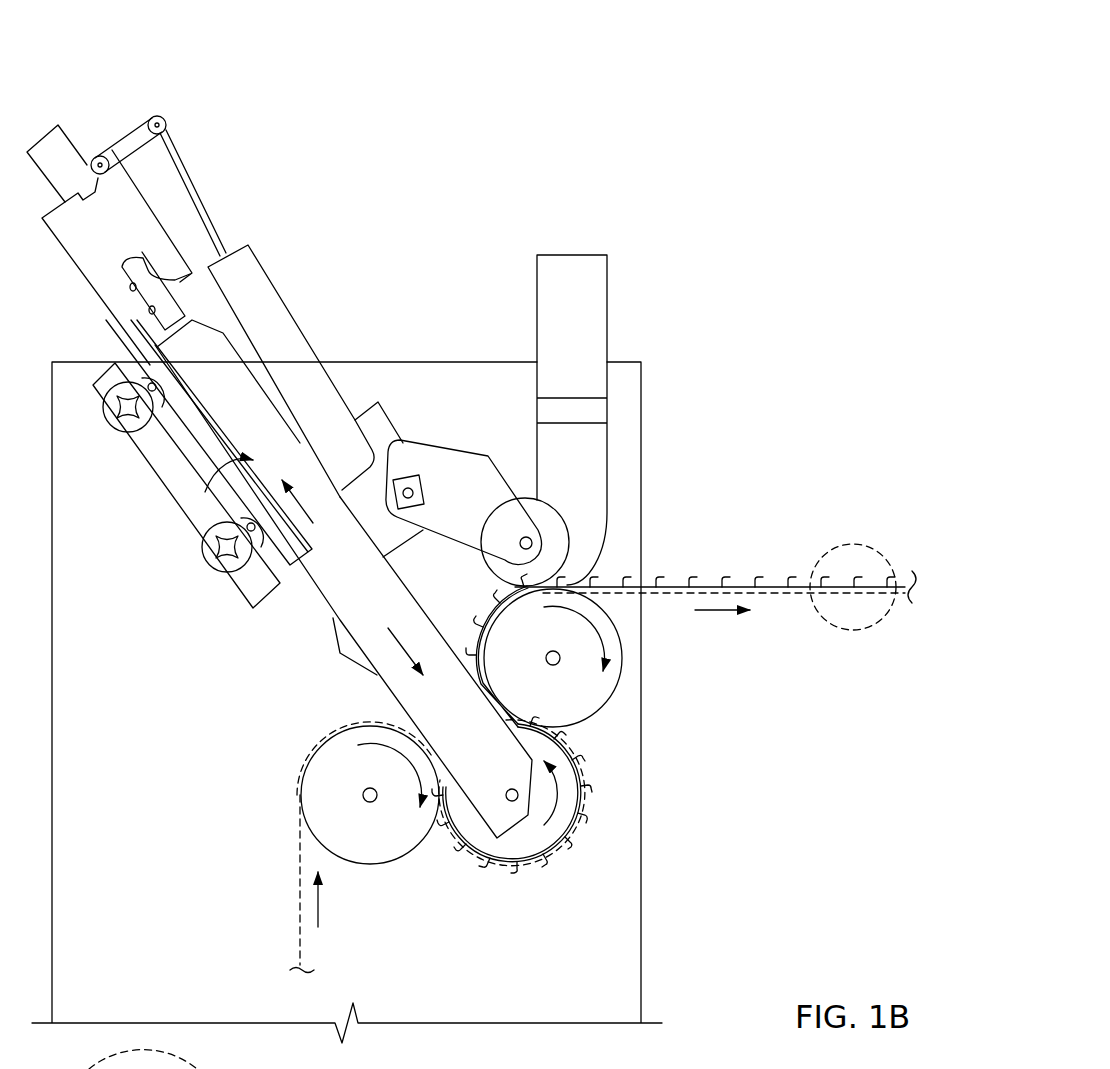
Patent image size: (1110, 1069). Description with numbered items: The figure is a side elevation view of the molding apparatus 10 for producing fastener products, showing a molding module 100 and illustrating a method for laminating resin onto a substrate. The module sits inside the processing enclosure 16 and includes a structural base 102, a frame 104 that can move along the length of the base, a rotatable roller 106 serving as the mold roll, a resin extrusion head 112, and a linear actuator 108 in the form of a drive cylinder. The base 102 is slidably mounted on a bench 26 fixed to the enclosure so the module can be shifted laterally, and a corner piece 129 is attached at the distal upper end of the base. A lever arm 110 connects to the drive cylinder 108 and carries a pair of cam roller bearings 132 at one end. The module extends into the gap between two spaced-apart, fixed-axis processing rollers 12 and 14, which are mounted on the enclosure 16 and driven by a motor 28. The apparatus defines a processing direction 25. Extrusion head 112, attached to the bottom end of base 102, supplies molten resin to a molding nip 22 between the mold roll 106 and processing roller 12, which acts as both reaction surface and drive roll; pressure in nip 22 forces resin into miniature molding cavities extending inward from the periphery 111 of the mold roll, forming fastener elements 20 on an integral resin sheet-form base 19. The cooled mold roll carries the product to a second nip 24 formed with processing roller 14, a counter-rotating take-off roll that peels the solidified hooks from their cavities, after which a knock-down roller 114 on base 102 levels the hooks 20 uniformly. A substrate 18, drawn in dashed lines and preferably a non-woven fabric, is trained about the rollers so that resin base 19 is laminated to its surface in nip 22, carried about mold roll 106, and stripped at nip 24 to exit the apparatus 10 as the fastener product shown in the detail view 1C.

The molding apparatus 10 is at (410, 38).
The molding module 100 is at (155, 95).
The lever arm 110 is at (128, 121).
The cam roller bearings 132 is at (97, 172).
The corner piece 129 is at (128, 208).
The structural base 102 is at (113, 290).
The frame 104 is at (205, 492).
The bench 26 is at (165, 457).
The linear actuator 108 is at (314, 347).
The resin extrusion head 112 is at (333, 640).
The motor 28 is at (608, 283).
The processing enclosure 16 is at (642, 403).
The knock-down roller 114 is at (543, 517).
The resin sheet-form base 19 is at (605, 585).
The fastener elements 20 is at (653, 585).
The detail circle 1C is at (852, 545).
The processing direction 25 is at (318, 907).
The processing roller 12 is at (330, 757).
The processing roller 14 is at (608, 673).
The second nip 24 is at (572, 732).
The rotatable roller 106 is at (572, 827).
The periphery 111 is at (513, 863).
The molding nip 22 is at (443, 832).
The substrate 18 is at (297, 903).